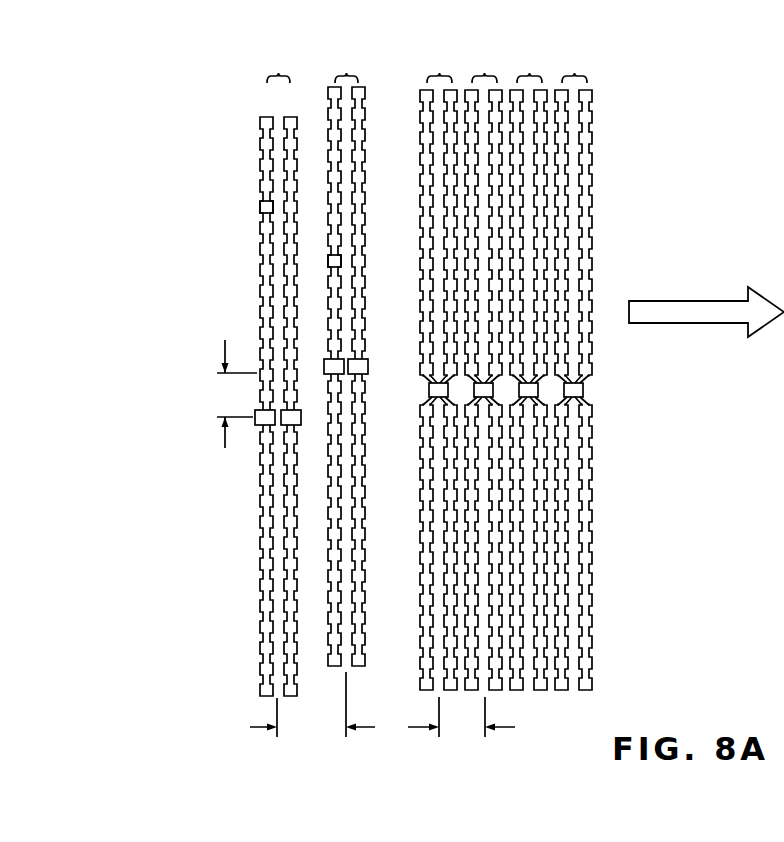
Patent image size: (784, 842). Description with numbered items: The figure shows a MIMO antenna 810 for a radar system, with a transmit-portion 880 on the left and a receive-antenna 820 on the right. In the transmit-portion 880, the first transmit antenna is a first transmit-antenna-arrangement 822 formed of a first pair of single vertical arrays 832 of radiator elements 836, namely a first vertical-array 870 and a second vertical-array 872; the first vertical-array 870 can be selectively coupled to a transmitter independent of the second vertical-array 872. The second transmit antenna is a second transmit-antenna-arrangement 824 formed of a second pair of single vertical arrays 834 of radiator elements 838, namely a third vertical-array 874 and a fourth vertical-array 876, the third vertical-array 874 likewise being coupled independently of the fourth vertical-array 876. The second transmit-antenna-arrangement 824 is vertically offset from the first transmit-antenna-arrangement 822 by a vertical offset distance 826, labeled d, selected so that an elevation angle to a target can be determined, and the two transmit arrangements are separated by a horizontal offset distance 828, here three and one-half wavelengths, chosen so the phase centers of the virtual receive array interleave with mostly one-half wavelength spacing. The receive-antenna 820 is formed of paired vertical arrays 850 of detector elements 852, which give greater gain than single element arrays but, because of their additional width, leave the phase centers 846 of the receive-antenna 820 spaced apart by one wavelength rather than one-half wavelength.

The MIMO antenna 810 is at (176, 114).
The first vertical-array 870 is at (261, 116).
The second vertical-array 872 is at (285, 117).
The third vertical-array 874 is at (332, 88).
The fourth vertical-array 876 is at (357, 88).
The first pair of single vertical arrays 832 is at (262, 203).
The second pair of single vertical arrays 834 is at (333, 265).
The vertical offset distance 826 is at (225, 353).
The radiator elements 836 is at (283, 462).
The radiator elements 838 is at (353, 503).
The second transmit-antenna-arrangement 824 is at (318, 584).
The first transmit-antenna-arrangement 822 is at (253, 638).
The horizontal offset distance 828 is at (250, 728).
The phase centers 846 is at (433, 397).
The detector elements 852 is at (513, 573).
The paired vertical arrays 850 is at (538, 653).
The transmit-portion 880 is at (253, 408).
The receive-antenna 820 is at (561, 441).